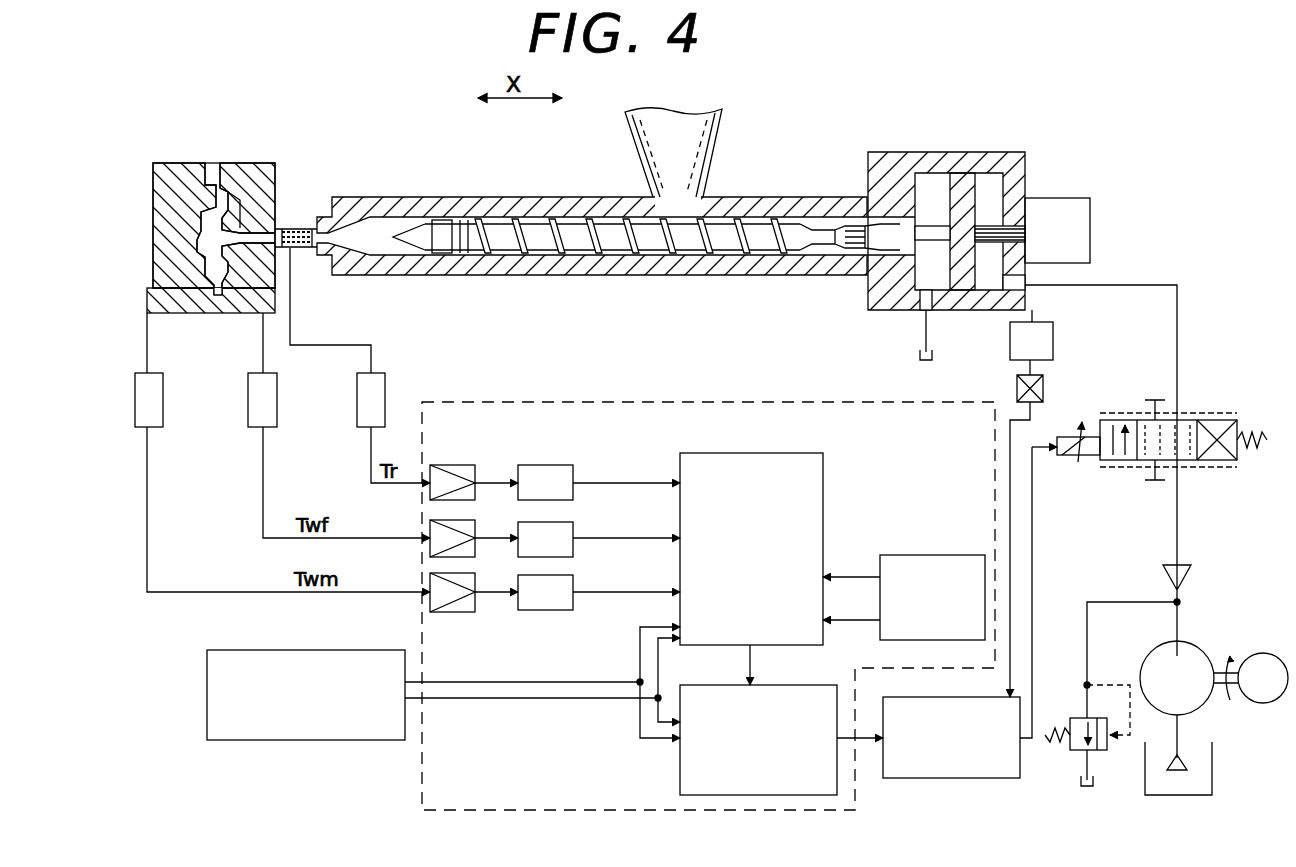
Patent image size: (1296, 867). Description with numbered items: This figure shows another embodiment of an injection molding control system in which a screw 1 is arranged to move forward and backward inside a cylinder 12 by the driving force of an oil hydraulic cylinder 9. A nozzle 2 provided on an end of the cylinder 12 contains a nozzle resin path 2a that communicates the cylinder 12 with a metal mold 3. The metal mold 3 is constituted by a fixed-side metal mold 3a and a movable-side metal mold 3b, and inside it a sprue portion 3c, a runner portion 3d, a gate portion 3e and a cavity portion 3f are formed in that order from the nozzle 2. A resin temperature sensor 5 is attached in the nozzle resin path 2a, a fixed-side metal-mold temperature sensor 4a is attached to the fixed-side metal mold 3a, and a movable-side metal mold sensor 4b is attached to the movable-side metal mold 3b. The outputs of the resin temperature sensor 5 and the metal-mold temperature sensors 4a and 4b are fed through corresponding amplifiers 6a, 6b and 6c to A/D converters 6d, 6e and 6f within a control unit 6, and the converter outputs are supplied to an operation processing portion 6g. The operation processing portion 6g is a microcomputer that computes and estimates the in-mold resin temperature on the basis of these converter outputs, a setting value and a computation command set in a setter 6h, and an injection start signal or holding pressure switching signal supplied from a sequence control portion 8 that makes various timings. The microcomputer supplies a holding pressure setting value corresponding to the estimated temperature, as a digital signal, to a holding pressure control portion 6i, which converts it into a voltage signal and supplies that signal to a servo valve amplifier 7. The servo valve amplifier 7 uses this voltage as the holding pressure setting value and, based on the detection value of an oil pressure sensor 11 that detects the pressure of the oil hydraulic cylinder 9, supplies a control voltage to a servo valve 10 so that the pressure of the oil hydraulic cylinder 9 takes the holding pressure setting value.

The screw 1 is at (497, 216).
The nozzle 2 is at (308, 228).
The nozzle resin path 2a is at (302, 250).
The metal mold 3 is at (141, 141).
The fixed-side metal mold 3a is at (264, 228).
The movable-side metal mold 3b is at (153, 223).
The sprue portion 3c is at (263, 212).
The runner portion 3d is at (256, 180).
The gate portion 3e is at (229, 178).
The cavity portion 3f is at (206, 178).
The fixed-side metal-mold temperature sensor 4a is at (272, 376).
The movable-side metal mold sensor 4b is at (160, 376).
The resin temperature sensor 5 is at (382, 376).
The control unit 6 is at (760, 402).
The amplifier 6a is at (446, 467).
The amplifier 6b is at (462, 520).
The amplifier 6c is at (462, 574).
The A/D converter 6d is at (546, 466).
The A/D converter 6e is at (562, 523).
The A/D converter 6f is at (562, 576).
The operation processing portion 6g is at (796, 456).
The setter 6h is at (928, 557).
The holding pressure control portion 6i is at (786, 690).
The servo valve amplifier 7 is at (992, 779).
The sequence control portion 8 is at (366, 652).
The oil hydraulic cylinder 9 is at (1025, 190).
The servo valve 10 is at (1205, 419).
The oil pressure sensor 11 is at (1053, 332).
The cylinder 12 is at (774, 198).